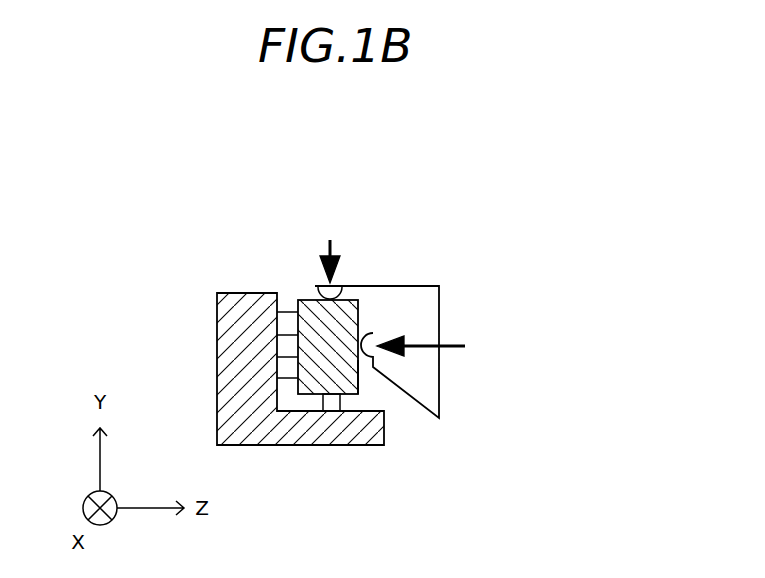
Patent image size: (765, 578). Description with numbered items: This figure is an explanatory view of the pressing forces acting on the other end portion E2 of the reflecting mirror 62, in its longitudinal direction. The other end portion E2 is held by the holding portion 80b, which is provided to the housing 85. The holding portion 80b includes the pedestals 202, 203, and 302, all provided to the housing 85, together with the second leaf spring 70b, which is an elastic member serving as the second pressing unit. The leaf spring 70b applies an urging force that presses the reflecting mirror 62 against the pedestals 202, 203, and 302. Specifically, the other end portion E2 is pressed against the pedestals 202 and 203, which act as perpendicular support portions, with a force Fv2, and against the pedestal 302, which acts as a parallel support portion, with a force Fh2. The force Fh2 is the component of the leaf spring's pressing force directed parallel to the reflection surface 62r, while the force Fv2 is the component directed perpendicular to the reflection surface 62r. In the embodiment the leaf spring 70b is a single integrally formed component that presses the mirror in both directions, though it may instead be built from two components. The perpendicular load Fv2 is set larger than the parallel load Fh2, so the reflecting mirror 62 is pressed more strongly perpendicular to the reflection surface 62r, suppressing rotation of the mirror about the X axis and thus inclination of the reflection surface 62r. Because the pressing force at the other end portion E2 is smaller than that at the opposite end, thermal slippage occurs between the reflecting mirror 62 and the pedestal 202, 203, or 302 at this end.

The holding portion 80b is at (257, 188).
The pedestal 202 is at (287, 323).
The pedestal 203 is at (288, 365).
The reflecting mirror 62 is at (325, 320).
The reflection surface 62r is at (358, 378).
The second leaf spring 70b is at (439, 307).
The housing 85 is at (253, 440).
The pedestal 302 is at (327, 400).
The other end portion E2 is at (312, 395).
The force Fh2 is at (339, 244).
The force Fv2 is at (451, 345).